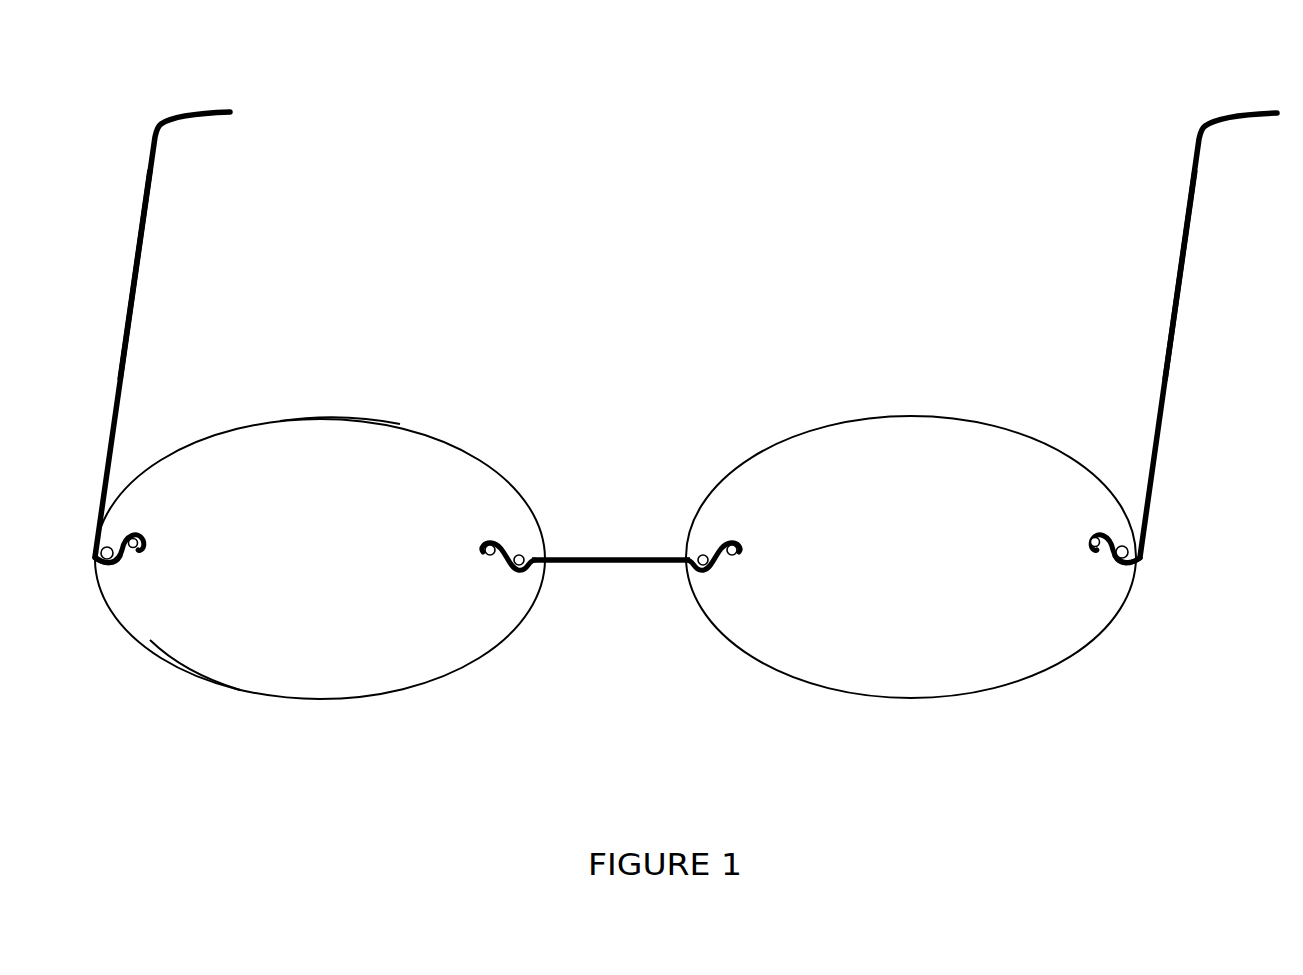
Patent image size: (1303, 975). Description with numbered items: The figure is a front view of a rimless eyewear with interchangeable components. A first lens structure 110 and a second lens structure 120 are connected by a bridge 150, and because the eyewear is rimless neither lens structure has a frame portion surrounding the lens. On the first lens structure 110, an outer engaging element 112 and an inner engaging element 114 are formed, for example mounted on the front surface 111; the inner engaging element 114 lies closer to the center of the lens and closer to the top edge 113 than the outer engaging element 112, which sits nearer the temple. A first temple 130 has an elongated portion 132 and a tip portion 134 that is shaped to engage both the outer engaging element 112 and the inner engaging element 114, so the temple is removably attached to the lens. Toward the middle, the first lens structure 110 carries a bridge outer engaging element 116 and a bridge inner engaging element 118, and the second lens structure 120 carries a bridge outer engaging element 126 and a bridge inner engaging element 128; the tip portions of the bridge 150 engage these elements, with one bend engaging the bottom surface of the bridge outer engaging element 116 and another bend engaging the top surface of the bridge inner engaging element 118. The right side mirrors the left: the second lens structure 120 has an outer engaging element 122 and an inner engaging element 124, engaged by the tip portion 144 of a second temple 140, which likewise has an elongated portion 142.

The first lens structure 110 is at (318, 694).
The front surface 111 is at (198, 668).
The top edge 113 is at (334, 419).
The second lens structure 120 is at (963, 678).
The first temple 130 is at (149, 190).
The elongated portion 132 is at (135, 288).
The tip portion 134 is at (98, 565).
The outer engaging element 112 is at (108, 540).
The inner engaging element 114 is at (130, 556).
The bridge outer engaging element 116 is at (522, 552).
The bridge inner engaging element 118 is at (487, 560).
The bridge 150 is at (603, 566).
The bridge inner engaging element 128 is at (701, 552).
The bridge outer engaging element 126 is at (735, 560).
The second temple 140 is at (1196, 203).
The elongated portion 142 is at (1172, 362).
The tip portion 144 is at (1138, 562).
The outer engaging element 122 is at (1126, 542).
The inner engaging element 124 is at (1093, 556).